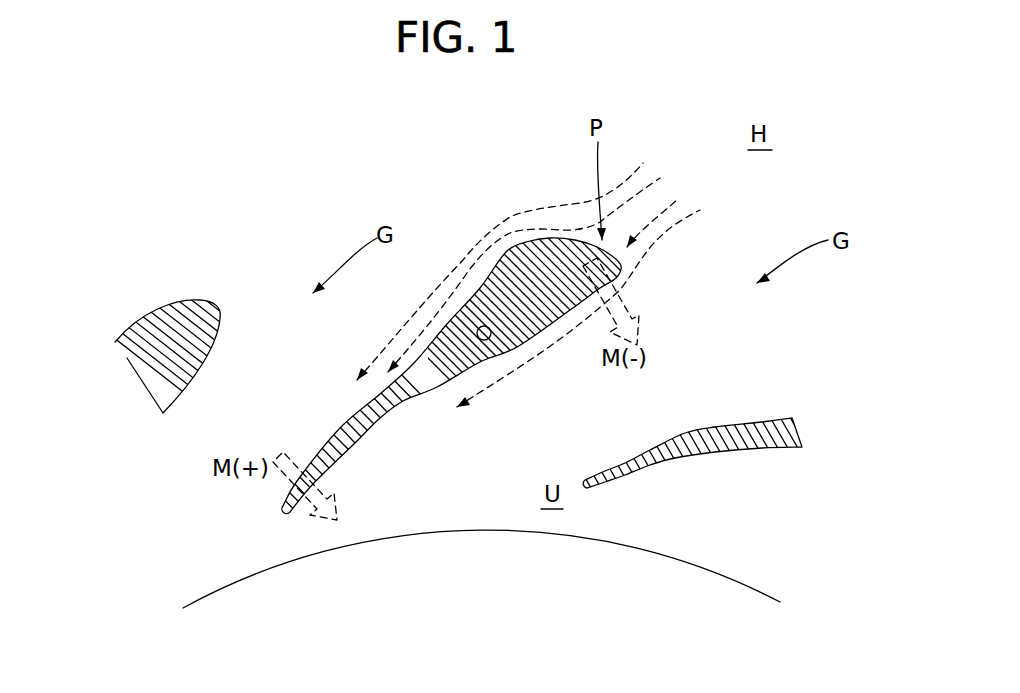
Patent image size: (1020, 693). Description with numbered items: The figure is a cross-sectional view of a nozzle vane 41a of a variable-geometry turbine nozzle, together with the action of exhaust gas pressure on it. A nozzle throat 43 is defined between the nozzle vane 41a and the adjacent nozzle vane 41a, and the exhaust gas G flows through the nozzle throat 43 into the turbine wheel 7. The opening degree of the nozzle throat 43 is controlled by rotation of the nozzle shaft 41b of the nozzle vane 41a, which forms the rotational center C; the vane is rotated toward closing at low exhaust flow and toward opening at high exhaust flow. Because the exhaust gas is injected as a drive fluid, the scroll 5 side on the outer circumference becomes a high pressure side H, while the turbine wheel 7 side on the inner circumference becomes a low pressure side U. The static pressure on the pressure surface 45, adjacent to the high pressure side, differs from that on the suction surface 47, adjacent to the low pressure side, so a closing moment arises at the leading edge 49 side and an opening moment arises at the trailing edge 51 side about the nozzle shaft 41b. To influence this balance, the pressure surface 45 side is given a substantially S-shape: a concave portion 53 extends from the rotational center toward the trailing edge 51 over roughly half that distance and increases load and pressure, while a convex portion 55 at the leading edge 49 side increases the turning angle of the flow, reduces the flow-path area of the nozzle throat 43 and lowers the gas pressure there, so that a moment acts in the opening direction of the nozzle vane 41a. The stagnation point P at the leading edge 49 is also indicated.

The scroll 5 is at (266, 182).
The turbine wheel 7 is at (221, 620).
The nozzle vane 41a is at (136, 312).
The nozzle shaft 41b is at (479, 340).
The nozzle throat 43 is at (217, 398).
The pressure surface 45 is at (346, 422).
The suction surface 47 is at (370, 428).
The leading edge 49 is at (623, 268).
The trailing edge 51 is at (281, 510).
The concave portion 53 is at (434, 333).
The convex portion 55 is at (507, 249).